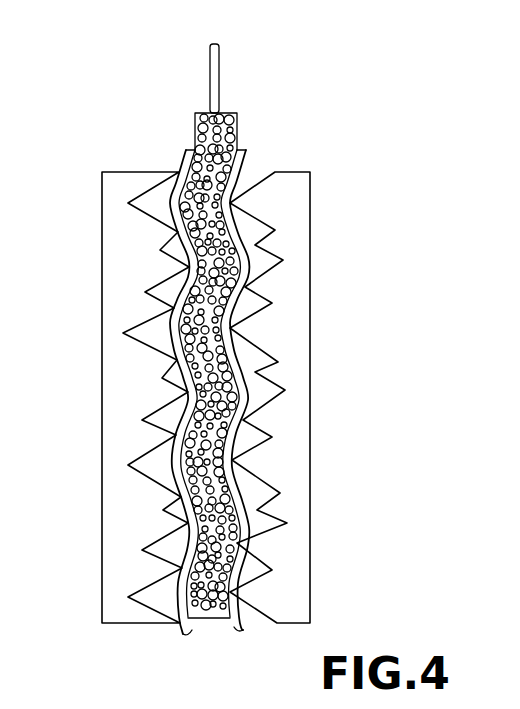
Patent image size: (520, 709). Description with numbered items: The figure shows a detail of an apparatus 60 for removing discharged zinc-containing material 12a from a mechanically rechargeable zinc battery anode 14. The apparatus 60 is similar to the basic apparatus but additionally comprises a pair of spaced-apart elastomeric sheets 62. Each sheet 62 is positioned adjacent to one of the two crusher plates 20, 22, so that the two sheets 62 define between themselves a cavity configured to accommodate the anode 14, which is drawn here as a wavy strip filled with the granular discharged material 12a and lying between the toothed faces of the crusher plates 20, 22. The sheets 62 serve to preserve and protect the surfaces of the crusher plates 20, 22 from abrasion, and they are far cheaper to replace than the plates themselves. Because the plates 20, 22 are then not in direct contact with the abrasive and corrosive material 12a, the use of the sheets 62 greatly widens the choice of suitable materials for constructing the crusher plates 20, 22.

The mechanically rechargeable zinc battery anode 14 is at (183, 57).
The elastomeric sheet 62 is at (182, 160).
The crusher plate 20 is at (117, 540).
The crusher plate 22 is at (303, 553).
The apparatus 60 is at (412, 319).
The discharged zinc-containing material 12a is at (203, 618).